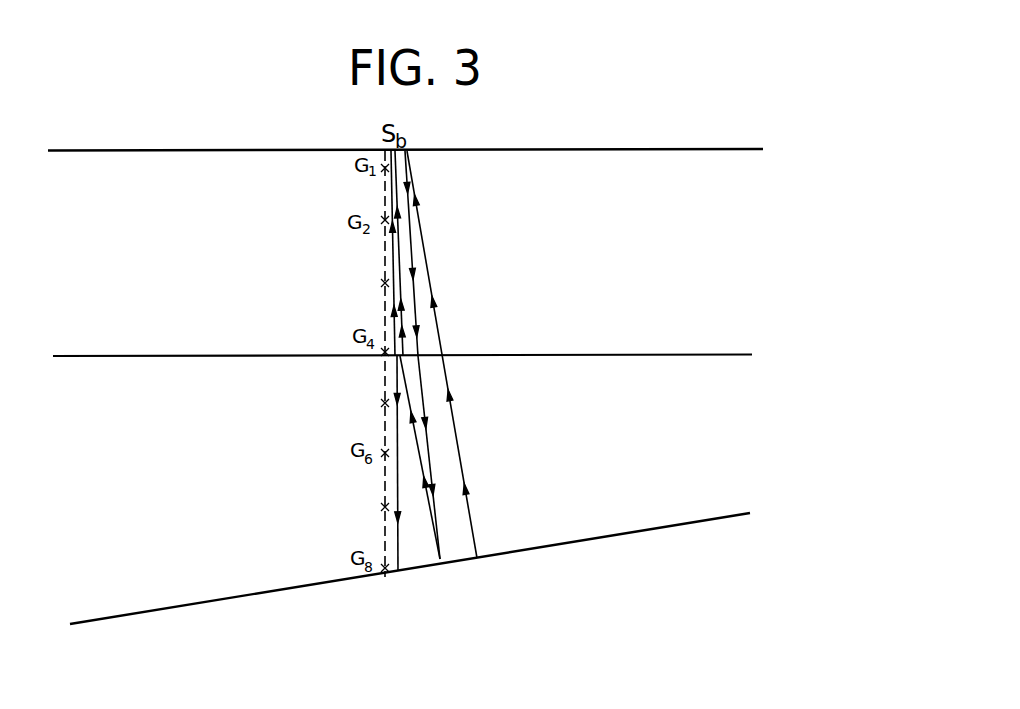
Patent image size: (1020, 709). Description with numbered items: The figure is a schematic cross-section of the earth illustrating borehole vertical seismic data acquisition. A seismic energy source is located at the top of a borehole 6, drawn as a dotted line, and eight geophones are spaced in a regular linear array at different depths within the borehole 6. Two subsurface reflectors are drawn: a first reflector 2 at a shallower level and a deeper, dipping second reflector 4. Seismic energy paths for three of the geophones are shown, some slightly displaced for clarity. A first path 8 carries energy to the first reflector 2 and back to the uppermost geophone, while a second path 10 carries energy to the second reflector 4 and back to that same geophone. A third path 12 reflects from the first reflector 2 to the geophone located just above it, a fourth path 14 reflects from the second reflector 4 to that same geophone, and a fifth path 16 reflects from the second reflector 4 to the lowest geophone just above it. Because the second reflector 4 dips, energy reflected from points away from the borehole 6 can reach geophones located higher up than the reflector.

The first reflector 2 is at (700, 354).
The second reflector 4 is at (687, 524).
The borehole 6 is at (375, 258).
The first path 8 is at (407, 281).
The second path 10 is at (437, 328).
The third path 12 is at (390, 314).
The fourth path 14 is at (425, 384).
The fifth path 16 is at (395, 538).